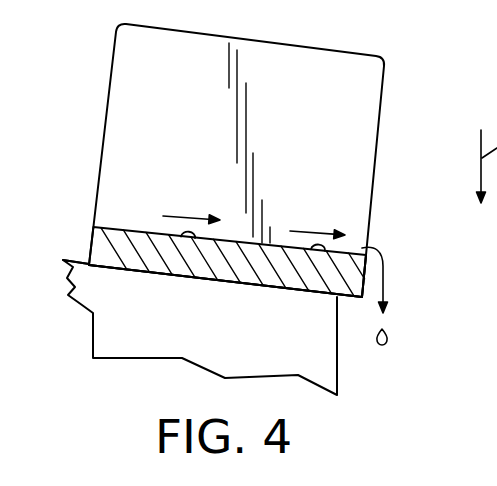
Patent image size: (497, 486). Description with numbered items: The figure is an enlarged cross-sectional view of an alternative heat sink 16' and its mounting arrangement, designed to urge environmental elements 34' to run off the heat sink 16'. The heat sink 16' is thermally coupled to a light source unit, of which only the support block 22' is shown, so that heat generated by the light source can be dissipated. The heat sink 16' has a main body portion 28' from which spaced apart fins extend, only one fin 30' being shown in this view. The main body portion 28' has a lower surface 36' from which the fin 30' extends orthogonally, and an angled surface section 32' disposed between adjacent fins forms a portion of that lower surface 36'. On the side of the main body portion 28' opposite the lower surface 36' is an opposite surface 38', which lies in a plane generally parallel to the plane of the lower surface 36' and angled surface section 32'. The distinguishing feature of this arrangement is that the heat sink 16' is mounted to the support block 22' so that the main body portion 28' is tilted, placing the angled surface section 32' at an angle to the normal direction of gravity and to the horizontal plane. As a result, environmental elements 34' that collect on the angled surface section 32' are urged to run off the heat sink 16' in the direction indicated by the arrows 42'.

The fin 30' is at (257, 149).
The heat sink 16' is at (434, 83).
The angled surface section 32' is at (203, 214).
The environmental elements 34' is at (297, 238).
The arrows 42' is at (330, 221).
The lower surface 36' is at (390, 239).
The opposite surface 38' is at (225, 311).
The support block 22' is at (199, 337).
The main body portion 28' is at (71, 311).